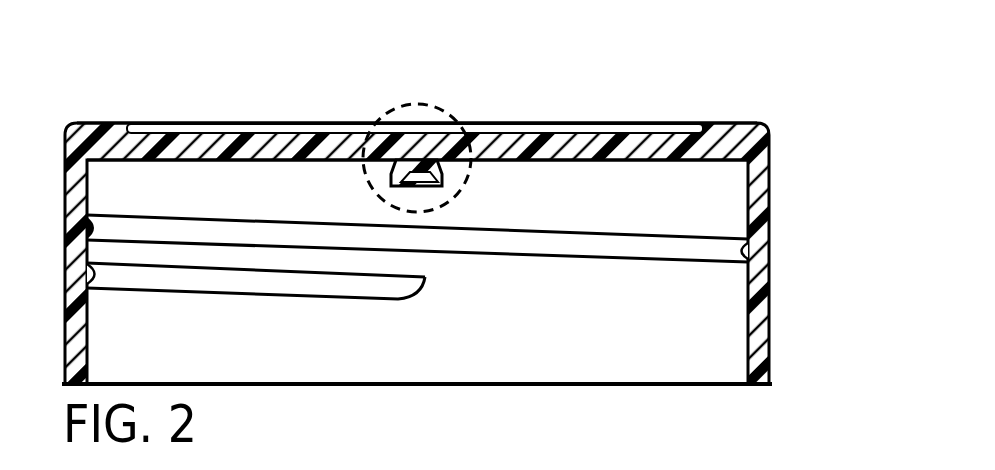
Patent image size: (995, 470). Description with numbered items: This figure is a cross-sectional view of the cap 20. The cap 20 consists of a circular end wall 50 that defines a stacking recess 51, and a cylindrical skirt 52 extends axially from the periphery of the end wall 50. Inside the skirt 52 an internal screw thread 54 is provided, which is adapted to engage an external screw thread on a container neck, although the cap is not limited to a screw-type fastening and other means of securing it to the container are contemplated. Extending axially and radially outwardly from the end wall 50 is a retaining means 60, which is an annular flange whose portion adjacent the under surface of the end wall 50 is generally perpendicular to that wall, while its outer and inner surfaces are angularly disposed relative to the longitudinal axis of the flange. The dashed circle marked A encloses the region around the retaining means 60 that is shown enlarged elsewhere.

The cap 20 is at (757, 113).
The circular end wall 50 is at (728, 121).
The stacking recess 51 is at (206, 127).
The cylindrical skirt 52 is at (770, 292).
The internal screw thread 54 is at (335, 288).
The retaining means 60 is at (441, 188).
The detail area A is at (447, 114).